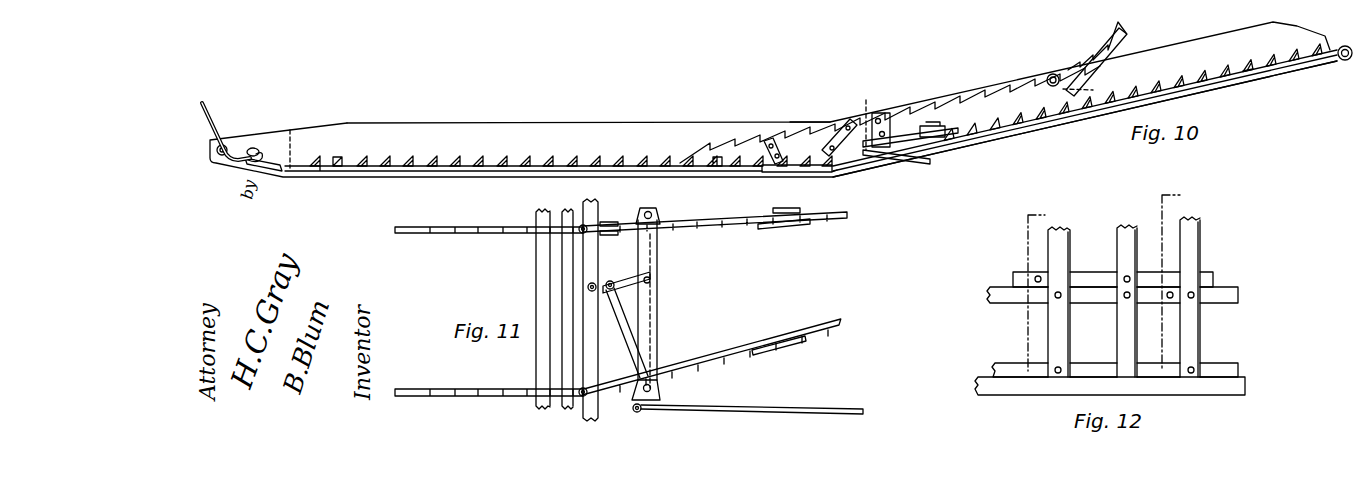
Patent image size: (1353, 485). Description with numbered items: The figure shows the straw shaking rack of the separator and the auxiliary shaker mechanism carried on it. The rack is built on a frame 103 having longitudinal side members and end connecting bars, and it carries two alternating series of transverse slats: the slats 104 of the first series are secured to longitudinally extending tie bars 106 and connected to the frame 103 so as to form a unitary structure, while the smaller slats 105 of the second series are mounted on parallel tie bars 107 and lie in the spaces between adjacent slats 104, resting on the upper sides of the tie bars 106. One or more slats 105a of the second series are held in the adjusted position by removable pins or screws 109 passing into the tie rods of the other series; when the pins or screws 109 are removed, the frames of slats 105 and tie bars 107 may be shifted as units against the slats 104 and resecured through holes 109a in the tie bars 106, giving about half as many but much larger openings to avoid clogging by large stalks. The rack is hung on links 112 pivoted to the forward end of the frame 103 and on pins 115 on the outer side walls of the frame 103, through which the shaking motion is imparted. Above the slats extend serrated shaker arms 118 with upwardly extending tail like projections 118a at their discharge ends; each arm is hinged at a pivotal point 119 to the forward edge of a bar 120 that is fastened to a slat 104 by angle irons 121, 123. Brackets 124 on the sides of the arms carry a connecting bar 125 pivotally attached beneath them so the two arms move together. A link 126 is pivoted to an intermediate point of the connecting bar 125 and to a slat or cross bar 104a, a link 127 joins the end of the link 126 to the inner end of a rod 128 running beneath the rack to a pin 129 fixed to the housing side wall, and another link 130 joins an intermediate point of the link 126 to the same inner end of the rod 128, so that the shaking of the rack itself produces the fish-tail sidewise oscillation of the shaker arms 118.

In FIG. 12, the frame 103 is at (1005, 395).
In FIG. 10, the slats 104 is at (403, 158).
In FIG. 12, the slats 104 is at (1057, 240).
In FIG. 10, the slat or cross bar 104a is at (1173, 82).
In FIG. 11, the slat or cross bar 104a is at (592, 238).
In FIG. 10, the slats 105 is at (478, 158).
In FIG. 12, the slats 105a is at (1120, 236).
In FIG. 12, the tie bars 106 is at (1000, 303).
In FIG. 12, the tie bars 107 is at (1013, 275).
In FIG. 12, the pins or screws 109 is at (1125, 298).
In FIG. 12, the holes 109a is at (1173, 297).
In FIG. 10, the link 112 is at (208, 105).
In FIG. 10, the pins 115 is at (1053, 74).
In FIG. 10, the shaker arms 118 is at (973, 97).
In FIG. 11, the shaker arms 118 is at (742, 216).
In FIG. 10, the tail like projections 118a is at (1122, 32).
In FIG. 11, the tail like projections 118a is at (808, 229).
In FIG. 10, the pivotal point 119 is at (879, 110).
In FIG. 11, the pivotal point 119 is at (581, 226).
In FIG. 10, the bars or arms 120 is at (810, 122).
In FIG. 11, the bars or arms 120 is at (470, 227).
In FIG. 10, the angle iron 121 is at (770, 137).
In FIG. 10, the angle iron 123 is at (840, 118).
In FIG. 11, the brackets 124 is at (644, 208).
In FIG. 10, the connecting bar 125 is at (930, 124).
In FIG. 11, the connecting bar 125 is at (658, 242).
In FIG. 11, the link 126 is at (630, 277).
In FIG. 10, the link 127 is at (925, 148).
In FIG. 11, the link 127 is at (651, 318).
In FIG. 10, the rod 128 is at (1062, 123).
In FIG. 11, the rod 128 is at (772, 406).
In FIG. 10, the pin 129 is at (1338, 61).
In FIG. 10, the link 130 is at (885, 156).
In FIG. 11, the link 130 is at (632, 404).